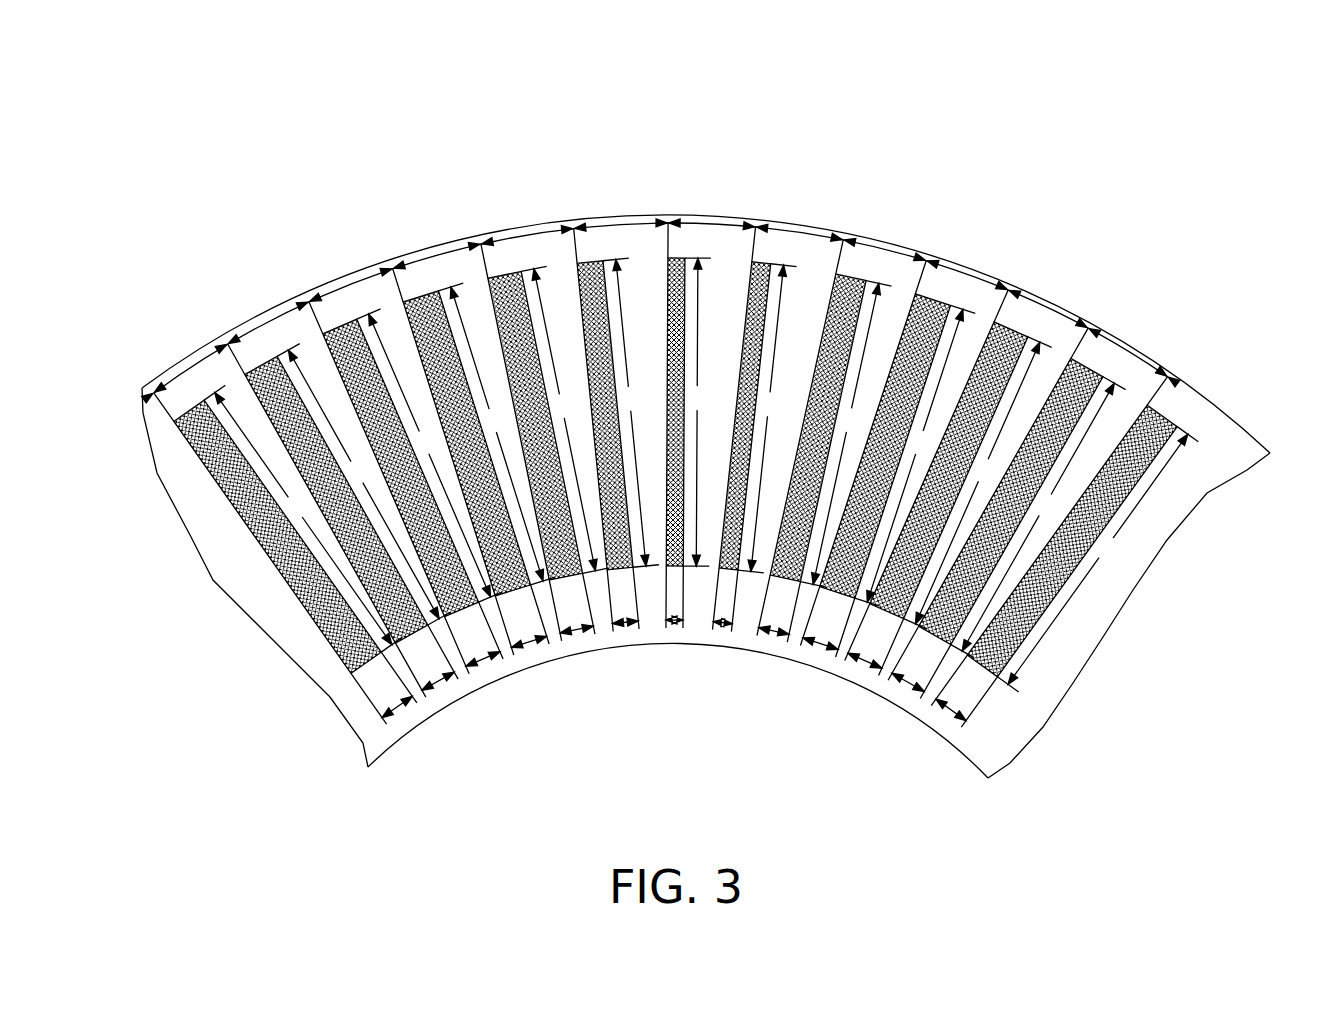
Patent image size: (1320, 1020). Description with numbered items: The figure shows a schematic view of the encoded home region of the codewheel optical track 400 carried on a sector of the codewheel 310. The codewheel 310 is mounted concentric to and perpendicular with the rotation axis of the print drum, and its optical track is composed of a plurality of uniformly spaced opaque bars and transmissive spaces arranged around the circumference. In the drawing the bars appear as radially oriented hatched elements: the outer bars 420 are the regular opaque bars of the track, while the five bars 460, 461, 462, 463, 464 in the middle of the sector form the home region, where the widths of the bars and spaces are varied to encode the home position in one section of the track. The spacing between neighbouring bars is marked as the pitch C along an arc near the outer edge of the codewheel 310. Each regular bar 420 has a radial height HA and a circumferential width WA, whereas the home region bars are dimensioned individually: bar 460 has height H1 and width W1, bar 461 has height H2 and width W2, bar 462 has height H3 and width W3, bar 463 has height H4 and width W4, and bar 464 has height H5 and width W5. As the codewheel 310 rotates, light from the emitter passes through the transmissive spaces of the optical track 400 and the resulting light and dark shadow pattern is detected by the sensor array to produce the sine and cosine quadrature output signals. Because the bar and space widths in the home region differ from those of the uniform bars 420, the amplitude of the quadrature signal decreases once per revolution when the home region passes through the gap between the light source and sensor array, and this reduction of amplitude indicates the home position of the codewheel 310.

The codewheel optical track 400 is at (1122, 154).
The codewheel 310 is at (1240, 418).
The pattern element 420 is at (188, 412).
The pattern element 460 is at (507, 276).
The pattern element 461 is at (591, 262).
The pattern element 462 is at (679, 258).
The pattern element 463 is at (764, 263).
The pattern element 464 is at (853, 277).
The pitch C is at (398, 266).
The height of pattern element HA is at (701, 487).
The height of pattern element H1 is at (564, 419).
The height of pattern element H2 is at (631, 412).
The height of pattern element H3 is at (699, 412).
The height of pattern element H4 is at (767, 418).
The height of pattern element H5 is at (845, 434).
The width of pattern element WA is at (397, 710).
The width of pattern element W1 is at (577, 633).
The width of pattern element W2 is at (625, 625).
The width of pattern element W3 is at (675, 623).
The width of pattern element W4 is at (723, 626).
The width of pattern element W5 is at (774, 634).